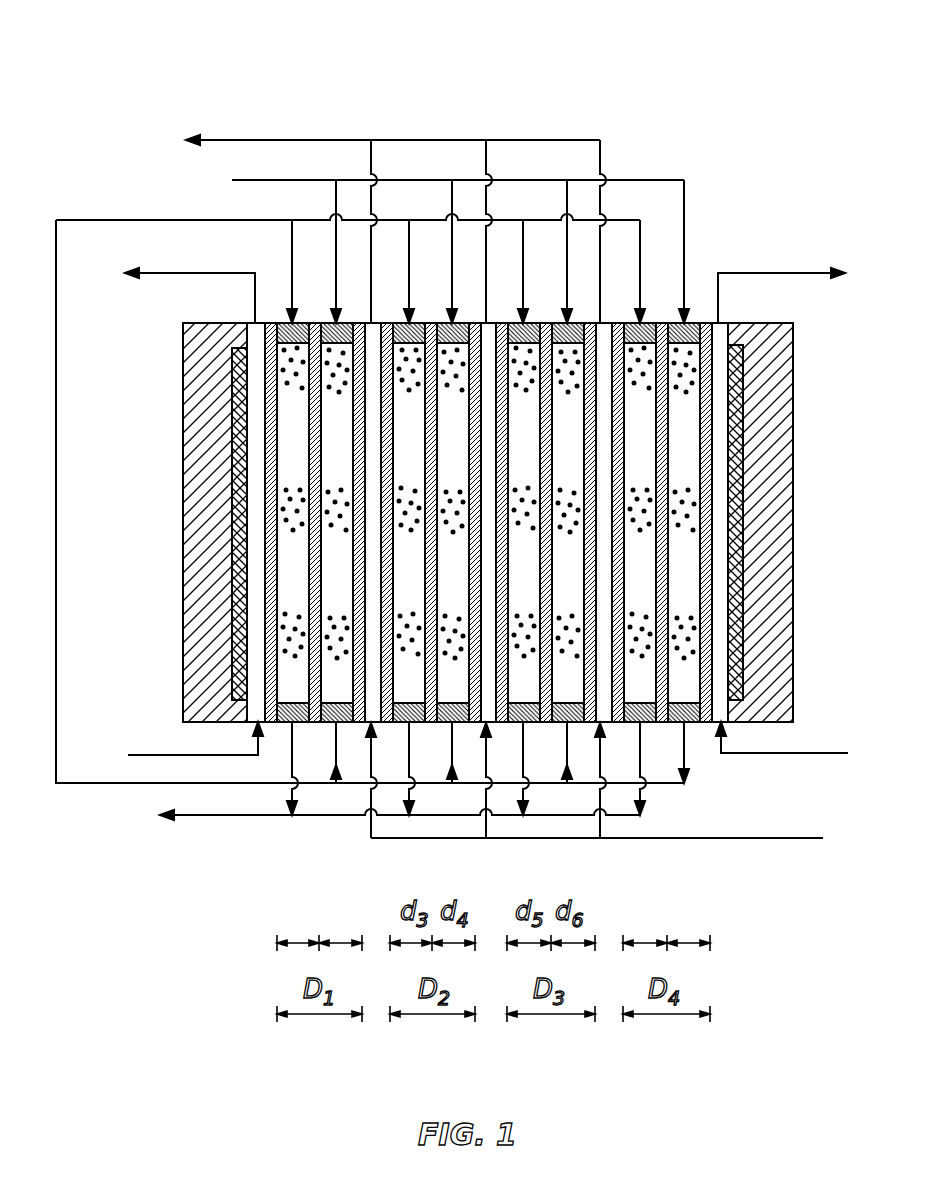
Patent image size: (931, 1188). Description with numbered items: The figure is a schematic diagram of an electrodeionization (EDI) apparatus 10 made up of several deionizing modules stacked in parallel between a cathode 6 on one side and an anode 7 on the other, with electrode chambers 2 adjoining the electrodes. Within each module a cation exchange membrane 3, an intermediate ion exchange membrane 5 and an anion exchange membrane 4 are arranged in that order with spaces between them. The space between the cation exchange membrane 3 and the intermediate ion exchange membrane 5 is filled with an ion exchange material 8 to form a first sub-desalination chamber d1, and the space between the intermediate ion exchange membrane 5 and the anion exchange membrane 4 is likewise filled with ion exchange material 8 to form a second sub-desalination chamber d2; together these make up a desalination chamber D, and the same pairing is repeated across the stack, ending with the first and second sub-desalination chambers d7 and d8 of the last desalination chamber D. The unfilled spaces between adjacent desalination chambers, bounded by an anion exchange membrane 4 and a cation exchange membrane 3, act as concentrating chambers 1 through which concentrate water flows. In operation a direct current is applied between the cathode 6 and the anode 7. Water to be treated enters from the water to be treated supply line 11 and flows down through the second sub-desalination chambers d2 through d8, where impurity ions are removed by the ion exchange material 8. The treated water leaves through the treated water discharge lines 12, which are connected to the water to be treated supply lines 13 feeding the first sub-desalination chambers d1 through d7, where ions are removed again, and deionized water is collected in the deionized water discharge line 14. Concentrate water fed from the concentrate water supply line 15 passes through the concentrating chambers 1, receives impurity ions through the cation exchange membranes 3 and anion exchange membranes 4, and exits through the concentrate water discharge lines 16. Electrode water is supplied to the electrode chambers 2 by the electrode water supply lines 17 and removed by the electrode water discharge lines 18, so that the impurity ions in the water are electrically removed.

The concentrating chamber 1 is at (488, 551).
The electrode chamber 2 is at (258, 586).
The cation exchange membrane 3 is at (383, 647).
The anion exchange membrane 4 is at (588, 637).
The intermediate ion exchange membrane 5 is at (310, 392).
The cathode 6 is at (240, 607).
The anode 7 is at (738, 597).
The ion exchange material 8 is at (290, 515).
The EDI apparatus 10 is at (768, 80).
The water to be treated supply line 11 is at (260, 180).
The treated water discharge line 12 is at (335, 767).
The water to be treated supply line of the first sub-desalination chambers 13 is at (290, 228).
The deionized water discharge line 14 is at (197, 818).
The concentrate water supply line 15 is at (807, 840).
The concentrate water discharge line 16 is at (265, 140).
The electrode water supply line 17 is at (165, 755).
The electrode water discharge line 18 is at (222, 273).
The desalination chamber D is at (398, 427).
The first sub-desalination chamber d1 is at (292, 453).
The second sub-desalination chamber d2 is at (335, 462).
The first sub-desalination chamber d7 is at (637, 443).
The second sub-desalination chamber d8 is at (683, 469).